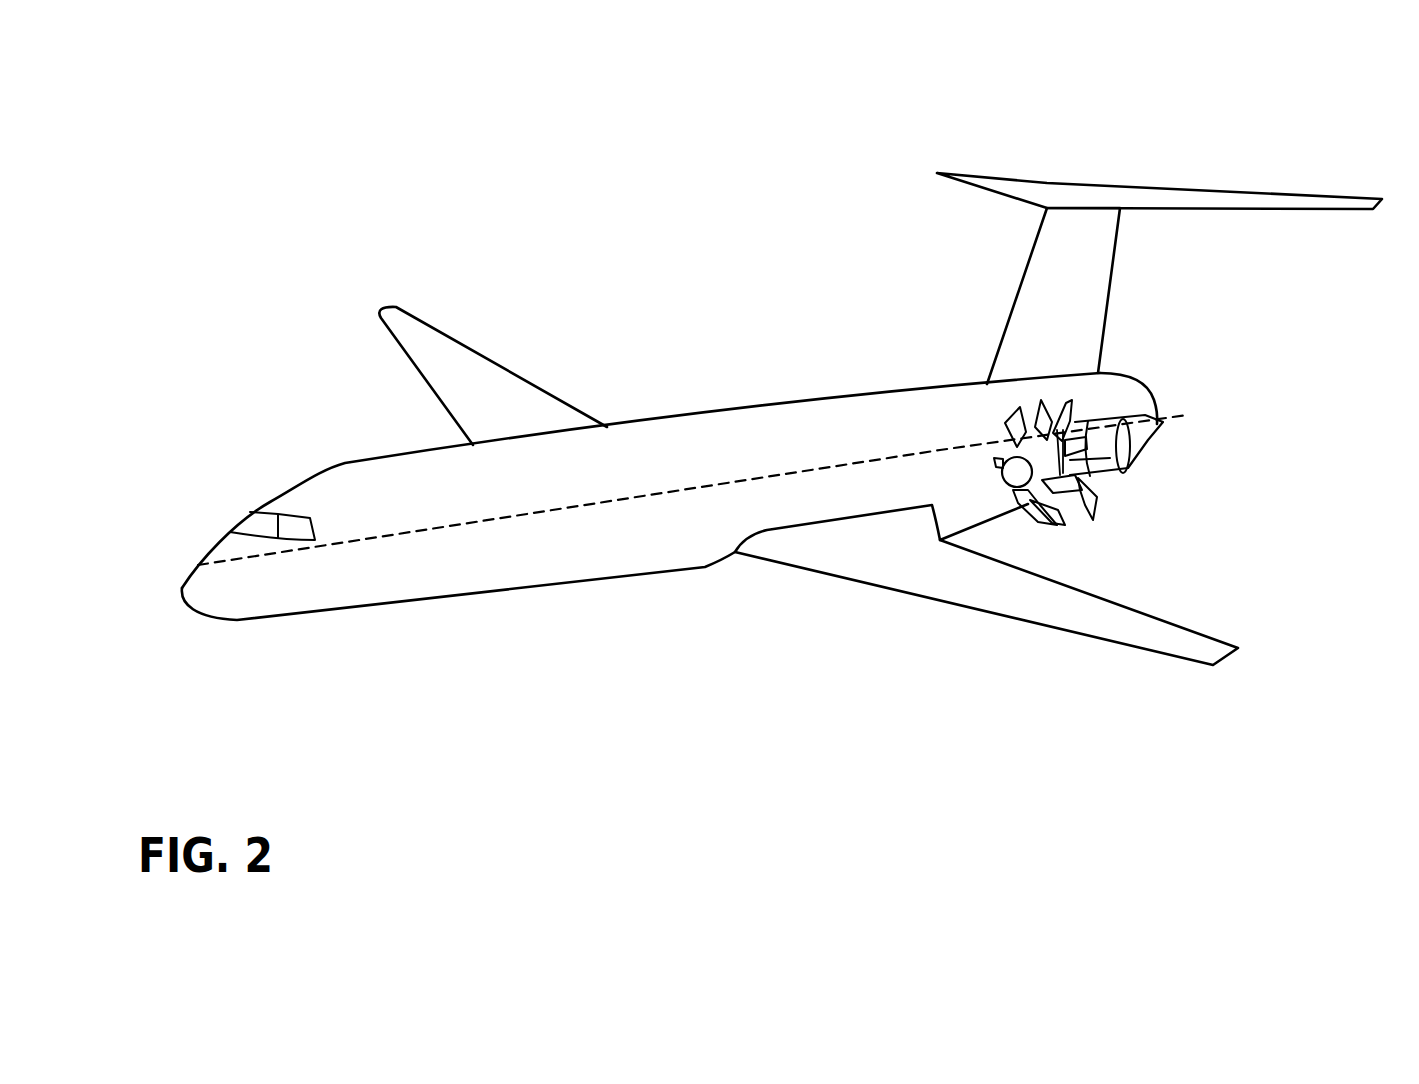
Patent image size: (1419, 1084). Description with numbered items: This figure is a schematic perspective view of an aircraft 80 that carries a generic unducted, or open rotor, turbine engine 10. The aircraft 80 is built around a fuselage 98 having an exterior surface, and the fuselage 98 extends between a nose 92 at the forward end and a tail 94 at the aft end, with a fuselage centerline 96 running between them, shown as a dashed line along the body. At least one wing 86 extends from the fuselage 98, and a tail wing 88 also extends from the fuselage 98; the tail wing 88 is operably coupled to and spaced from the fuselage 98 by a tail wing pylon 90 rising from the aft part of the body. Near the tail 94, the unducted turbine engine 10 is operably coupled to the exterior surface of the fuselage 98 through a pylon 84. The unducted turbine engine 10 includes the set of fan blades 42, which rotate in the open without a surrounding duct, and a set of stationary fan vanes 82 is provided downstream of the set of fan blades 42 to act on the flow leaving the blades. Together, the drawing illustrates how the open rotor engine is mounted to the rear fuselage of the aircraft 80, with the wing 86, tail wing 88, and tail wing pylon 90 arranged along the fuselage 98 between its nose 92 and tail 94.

The unducted turbine engine 10 is at (1116, 481).
The set of fan blades 42 is at (1015, 412).
The aircraft 80 is at (372, 208).
The set of stationary fan vanes 82 is at (1068, 416).
The pylon 84 is at (995, 458).
The wing 86 is at (1067, 632).
The tail wing 88 is at (1175, 192).
The tail wing pylon 90 is at (1017, 288).
The nose 92 is at (182, 587).
The tail 94 is at (1137, 380).
The fuselage centerline 96 is at (422, 528).
The fuselage 98 is at (732, 408).